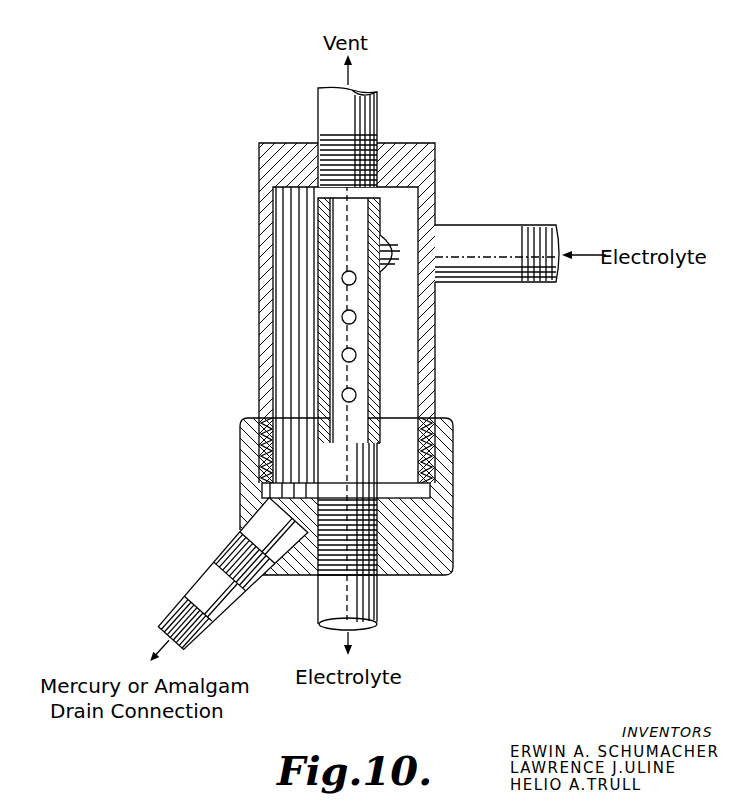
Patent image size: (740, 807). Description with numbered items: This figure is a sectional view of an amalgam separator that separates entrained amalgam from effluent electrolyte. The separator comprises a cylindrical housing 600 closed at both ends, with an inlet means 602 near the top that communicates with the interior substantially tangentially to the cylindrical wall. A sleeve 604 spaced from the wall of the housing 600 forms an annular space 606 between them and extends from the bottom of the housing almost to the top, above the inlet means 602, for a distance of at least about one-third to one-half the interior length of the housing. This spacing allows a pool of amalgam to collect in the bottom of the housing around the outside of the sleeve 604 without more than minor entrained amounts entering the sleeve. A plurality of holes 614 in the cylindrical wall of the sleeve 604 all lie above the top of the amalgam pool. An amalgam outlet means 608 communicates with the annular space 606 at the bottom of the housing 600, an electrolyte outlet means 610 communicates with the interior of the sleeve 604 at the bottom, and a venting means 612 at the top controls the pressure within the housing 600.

The cylindrical housing 600 is at (425, 160).
The inlet means 602 is at (506, 240).
The sleeve 604 is at (373, 373).
The annular space 606 is at (400, 407).
The amalgam outlet means 608 is at (223, 580).
The electrolyte outlet means 610 is at (353, 603).
The venting means 612 is at (335, 102).
The holes 614 is at (376, 283).